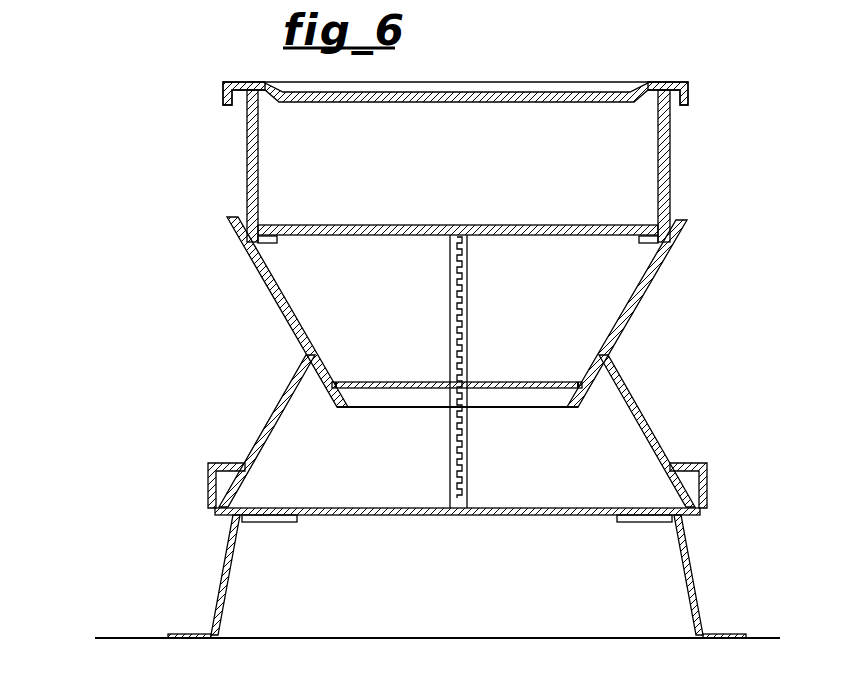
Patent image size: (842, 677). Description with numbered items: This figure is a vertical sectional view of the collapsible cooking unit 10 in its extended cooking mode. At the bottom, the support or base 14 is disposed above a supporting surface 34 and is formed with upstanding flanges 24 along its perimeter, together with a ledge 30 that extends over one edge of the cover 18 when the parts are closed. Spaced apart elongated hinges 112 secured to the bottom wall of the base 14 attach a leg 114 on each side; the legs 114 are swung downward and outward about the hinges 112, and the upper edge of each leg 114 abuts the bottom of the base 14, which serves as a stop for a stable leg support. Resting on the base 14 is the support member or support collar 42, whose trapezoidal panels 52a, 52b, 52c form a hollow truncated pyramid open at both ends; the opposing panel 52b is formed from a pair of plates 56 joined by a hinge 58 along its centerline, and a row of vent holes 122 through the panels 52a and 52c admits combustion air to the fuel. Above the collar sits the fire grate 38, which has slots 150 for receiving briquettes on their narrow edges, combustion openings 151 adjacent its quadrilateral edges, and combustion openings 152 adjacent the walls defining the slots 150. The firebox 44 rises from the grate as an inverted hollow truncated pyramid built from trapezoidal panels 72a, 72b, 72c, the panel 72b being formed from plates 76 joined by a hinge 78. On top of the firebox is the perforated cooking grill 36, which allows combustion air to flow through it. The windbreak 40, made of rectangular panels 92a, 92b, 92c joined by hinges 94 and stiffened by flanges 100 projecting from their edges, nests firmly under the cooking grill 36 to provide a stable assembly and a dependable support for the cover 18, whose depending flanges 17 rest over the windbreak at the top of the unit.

The collapsible cooking unit 10 is at (120, 155).
The support or base 14 is at (467, 530).
The depending flanges 17 is at (223, 92).
The cover 18 is at (643, 75).
The upstanding flanges 24 is at (207, 495).
The ledge 30 is at (235, 462).
The supporting surface 34 is at (365, 637).
The cooking grill 36 is at (423, 224).
The fire grate 38 is at (430, 382).
The windbreak 40 is at (467, 153).
The support member or support collar 42 is at (468, 456).
The upper funnel section 44 is at (476, 330).
The trapezoidally shaped panel 52a is at (275, 405).
The trapezoidally shaped panel 52b is at (607, 420).
The trapezoidally shaped panel 52c is at (670, 442).
The plates 56 is at (433, 495).
The hinge 58 is at (457, 466).
The trapezoidally shaped panel 72a is at (256, 278).
The trapezoidally shaped panel 72b is at (617, 285).
The trapezoidally shaped panel 72c is at (657, 285).
The plates 76 is at (463, 371).
The hinge 78 is at (455, 323).
The rectangularly shaped panel 92a is at (258, 158).
The rectangularly shaped panel 92b is at (490, 168).
The rectangularly shaped panel 92c is at (658, 140).
The hinges 94 is at (247, 152).
The flanges 100 is at (270, 243).
The elongated hinges 112 is at (267, 523).
The leg 114 is at (222, 570).
The vent holes 122 is at (262, 435).
The slot 150 is at (397, 392).
The combustion openings 151 is at (343, 381).
The combustion openings 152 is at (545, 381).